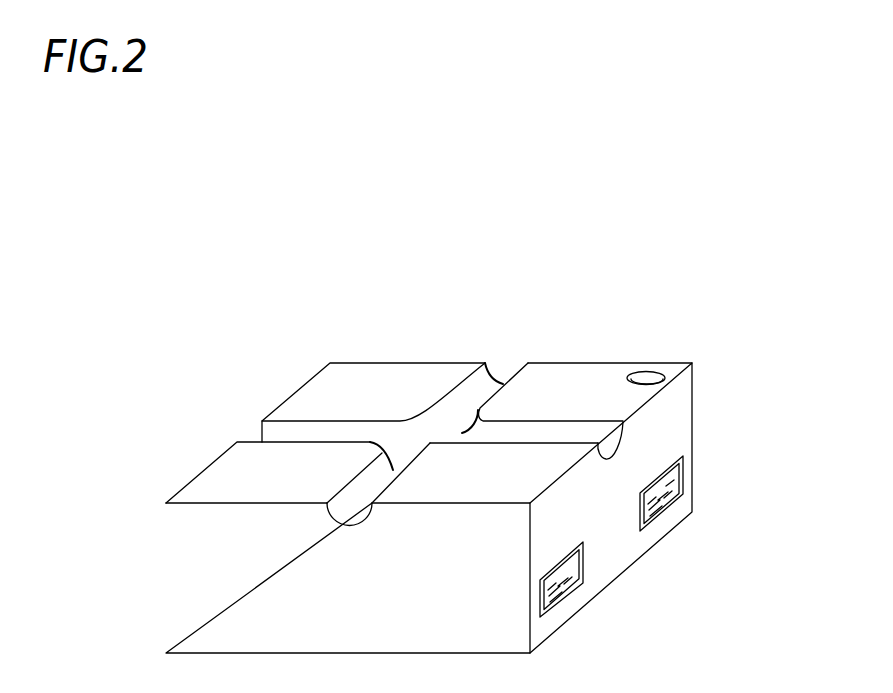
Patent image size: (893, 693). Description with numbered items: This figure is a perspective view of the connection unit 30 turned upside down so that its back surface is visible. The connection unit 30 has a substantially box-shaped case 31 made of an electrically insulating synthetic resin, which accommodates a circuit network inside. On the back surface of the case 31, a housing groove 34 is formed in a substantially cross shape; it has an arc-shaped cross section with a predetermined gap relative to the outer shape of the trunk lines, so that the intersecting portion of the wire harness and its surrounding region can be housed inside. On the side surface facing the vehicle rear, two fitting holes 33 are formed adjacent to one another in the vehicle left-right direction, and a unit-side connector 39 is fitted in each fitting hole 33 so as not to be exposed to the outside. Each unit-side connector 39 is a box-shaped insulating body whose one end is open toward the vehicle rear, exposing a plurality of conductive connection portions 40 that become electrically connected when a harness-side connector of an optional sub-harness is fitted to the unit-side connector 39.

The connection unit 30 is at (354, 350).
The case 31 is at (437, 370).
The fitting hole 33 is at (654, 372).
The housing groove 34 is at (432, 438).
The unit-side connector 39 is at (665, 512).
The connection portion 40 is at (683, 482).